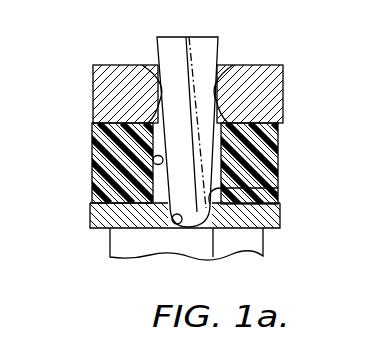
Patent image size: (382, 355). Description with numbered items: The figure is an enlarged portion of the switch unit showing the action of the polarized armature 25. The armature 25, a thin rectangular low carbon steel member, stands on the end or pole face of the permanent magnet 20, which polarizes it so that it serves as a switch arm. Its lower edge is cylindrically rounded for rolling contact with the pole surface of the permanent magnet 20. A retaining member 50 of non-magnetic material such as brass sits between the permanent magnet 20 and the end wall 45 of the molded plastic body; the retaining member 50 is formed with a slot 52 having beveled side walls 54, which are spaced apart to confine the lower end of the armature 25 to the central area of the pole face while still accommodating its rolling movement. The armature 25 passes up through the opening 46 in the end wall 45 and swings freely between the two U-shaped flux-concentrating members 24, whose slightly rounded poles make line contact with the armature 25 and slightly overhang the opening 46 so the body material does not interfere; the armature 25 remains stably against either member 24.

The permanent magnet 20 is at (253, 243).
The flux-concentrating members 24 is at (115, 68).
The armature 25 is at (186, 37).
The end wall 45 is at (108, 144).
The opening 46 is at (140, 171).
The retaining member 50 is at (272, 211).
The slot 52 is at (213, 257).
The beveled side walls 54 is at (278, 188).